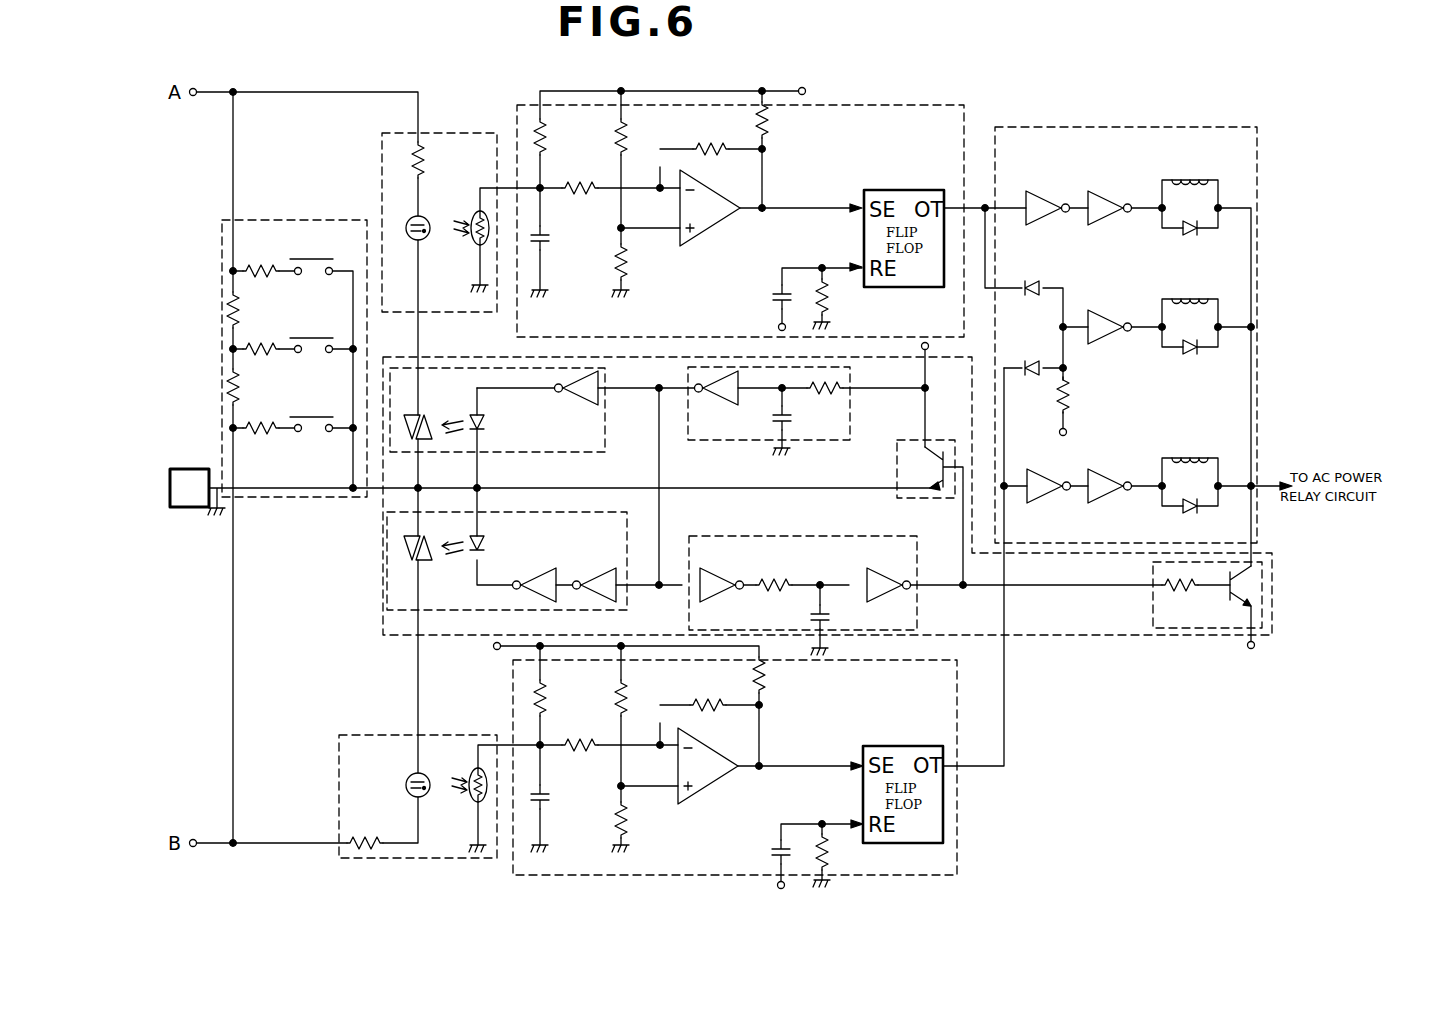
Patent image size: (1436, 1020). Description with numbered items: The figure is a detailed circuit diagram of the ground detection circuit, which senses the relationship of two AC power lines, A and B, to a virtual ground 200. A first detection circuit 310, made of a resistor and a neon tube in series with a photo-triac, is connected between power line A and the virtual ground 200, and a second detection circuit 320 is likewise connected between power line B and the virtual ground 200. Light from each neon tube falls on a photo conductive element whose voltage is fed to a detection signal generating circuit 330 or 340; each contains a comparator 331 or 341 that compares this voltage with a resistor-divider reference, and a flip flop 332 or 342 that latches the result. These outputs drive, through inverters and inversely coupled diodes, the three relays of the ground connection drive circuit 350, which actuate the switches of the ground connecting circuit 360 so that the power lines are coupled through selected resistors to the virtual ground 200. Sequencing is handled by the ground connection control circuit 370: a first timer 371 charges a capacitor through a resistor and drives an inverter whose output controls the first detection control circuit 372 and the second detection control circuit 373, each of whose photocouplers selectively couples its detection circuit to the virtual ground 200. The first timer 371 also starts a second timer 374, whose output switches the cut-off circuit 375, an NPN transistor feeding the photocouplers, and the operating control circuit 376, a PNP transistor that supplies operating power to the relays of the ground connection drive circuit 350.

The virtual ground 200 is at (172, 507).
The first detection circuit 310 is at (450, 133).
The second detection circuit 320 is at (340, 735).
The detection signal generating circuit 330 is at (740, 200).
The comparator 331 is at (790, 248).
The flip flop 332 is at (878, 190).
The detection signal generating circuit 340 is at (745, 639).
The comparator 341 is at (718, 796).
The flip flop 342 is at (893, 746).
The ground connection drive circuit 350 is at (1137, 127).
The ground connecting circuit 360 is at (220, 322).
The ground connection control circuit 370 is at (792, 488).
The first timer 371 is at (852, 437).
The first detection control circuit 372 is at (566, 452).
The second detection control circuit 373 is at (626, 610).
The second timer 374 is at (752, 536).
The cut-off circuit 375 is at (897, 480).
The operating control circuit 376 is at (1153, 600).